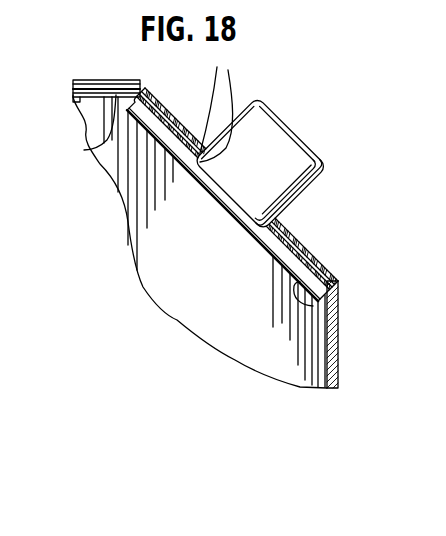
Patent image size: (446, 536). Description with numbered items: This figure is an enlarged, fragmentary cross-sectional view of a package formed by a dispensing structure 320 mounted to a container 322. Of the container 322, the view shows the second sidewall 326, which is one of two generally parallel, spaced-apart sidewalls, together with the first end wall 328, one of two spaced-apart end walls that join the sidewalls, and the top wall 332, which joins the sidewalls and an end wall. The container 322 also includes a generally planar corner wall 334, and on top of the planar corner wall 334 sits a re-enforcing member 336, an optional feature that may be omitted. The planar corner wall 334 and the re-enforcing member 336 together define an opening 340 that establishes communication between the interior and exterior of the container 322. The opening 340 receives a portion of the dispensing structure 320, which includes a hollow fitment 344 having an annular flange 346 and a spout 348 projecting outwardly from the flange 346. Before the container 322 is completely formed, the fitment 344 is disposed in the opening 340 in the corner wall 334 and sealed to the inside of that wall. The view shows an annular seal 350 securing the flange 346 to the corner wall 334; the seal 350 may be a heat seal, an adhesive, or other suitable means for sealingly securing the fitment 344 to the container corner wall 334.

The dispensing structure 320 is at (300, 121).
The container 322 is at (63, 72).
The second sidewall 326 is at (263, 367).
The first end wall 328 is at (339, 349).
The top wall 332 is at (83, 128).
The planar corner wall 334 is at (334, 273).
The re-enforcing member 336 is at (317, 255).
The opening 340 is at (217, 72).
The hollow fitment 344 is at (204, 203).
The annular flange 346 is at (313, 306).
The spout 348 is at (294, 190).
The annular seal 350 is at (127, 150).